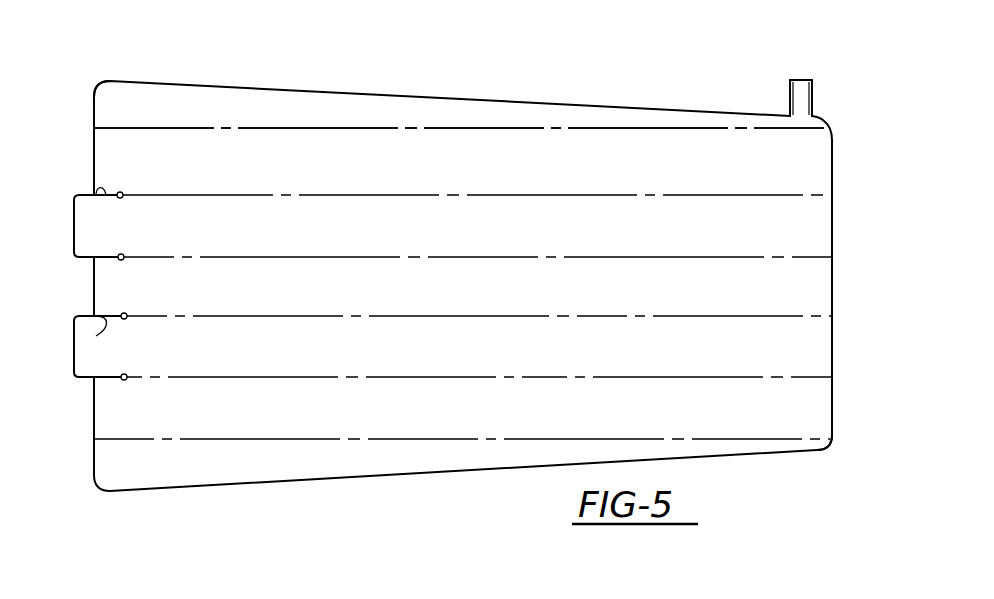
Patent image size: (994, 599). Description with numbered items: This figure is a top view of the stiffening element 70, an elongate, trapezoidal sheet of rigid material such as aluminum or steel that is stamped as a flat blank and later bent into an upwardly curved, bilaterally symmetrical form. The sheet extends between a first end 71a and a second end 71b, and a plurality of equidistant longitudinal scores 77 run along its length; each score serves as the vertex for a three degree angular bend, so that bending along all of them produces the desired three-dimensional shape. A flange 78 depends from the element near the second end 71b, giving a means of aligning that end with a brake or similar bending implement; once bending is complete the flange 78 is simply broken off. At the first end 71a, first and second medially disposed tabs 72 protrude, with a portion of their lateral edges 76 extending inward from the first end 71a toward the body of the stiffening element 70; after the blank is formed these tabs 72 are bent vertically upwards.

The stiffening element 70 is at (352, 482).
The first end 71a is at (93, 140).
The second end 71b is at (833, 408).
The tabs 72 is at (74, 226).
The lateral edges 76 is at (98, 196).
The longitudinal scores 77 is at (798, 116).
The flange 78 is at (812, 92).